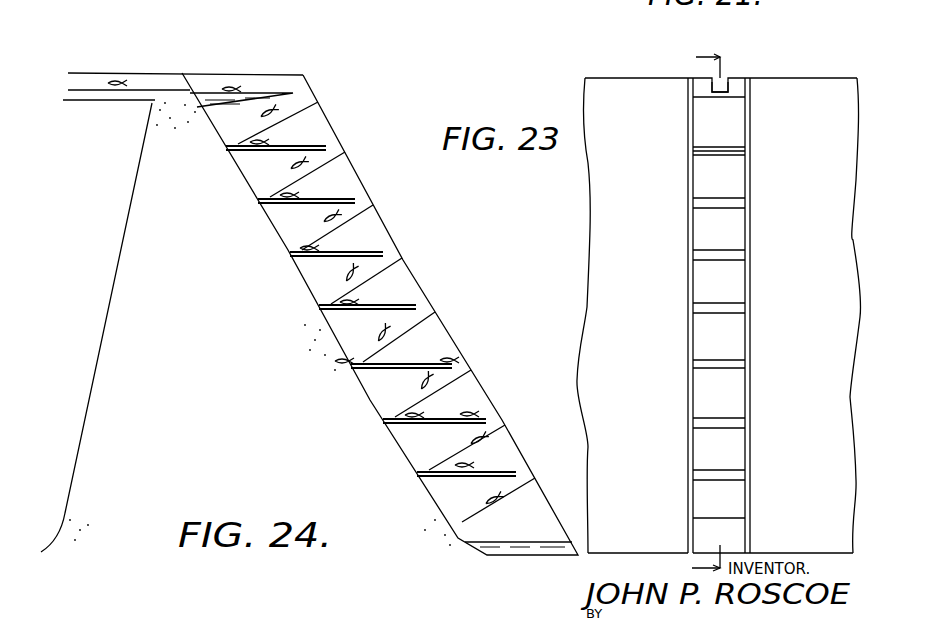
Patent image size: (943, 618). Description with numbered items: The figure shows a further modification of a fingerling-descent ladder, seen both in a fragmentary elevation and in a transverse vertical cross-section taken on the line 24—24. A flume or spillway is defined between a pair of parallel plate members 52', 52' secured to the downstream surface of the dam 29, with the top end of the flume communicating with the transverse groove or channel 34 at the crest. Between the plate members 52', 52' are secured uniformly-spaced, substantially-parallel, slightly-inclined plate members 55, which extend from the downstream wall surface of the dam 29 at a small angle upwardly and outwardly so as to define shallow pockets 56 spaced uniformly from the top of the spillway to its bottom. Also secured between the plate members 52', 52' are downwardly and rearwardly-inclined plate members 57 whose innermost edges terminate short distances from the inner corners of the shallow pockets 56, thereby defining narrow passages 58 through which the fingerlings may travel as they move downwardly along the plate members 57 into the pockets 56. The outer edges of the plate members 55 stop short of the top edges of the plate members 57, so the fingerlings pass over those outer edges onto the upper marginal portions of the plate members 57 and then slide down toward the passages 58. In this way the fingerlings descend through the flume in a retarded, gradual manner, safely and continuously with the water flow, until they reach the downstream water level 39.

In FIG. 23, the section line 24— 24 is at (687, 312).
In FIG. 24, the dam 29 is at (160, 228).
In FIG. 23, the dam 29 is at (610, 192).
In FIG. 24, the transverse groove or channel 34 is at (173, 88).
In FIG. 23, the transverse groove or channel 34 is at (723, 83).
In FIG. 24, the downstream water level 39 is at (498, 541).
In FIG. 23, the downstream water level 39 is at (781, 540).
In FIG. 24, the parallel plate members 52' is at (380, 314).
In FIG. 23, the parallel plate members 52' is at (722, 315).
In FIG. 24, the slightly-inclined plate members 55 is at (222, 106).
In FIG. 23, the slightly-inclined plate members 55 is at (713, 157).
In FIG. 24, the shallow pockets 56 is at (258, 200).
In FIG. 24, the downwardly and rearwardly-inclined plate members 57 is at (290, 117).
In FIG. 23, the downwardly and rearwardly-inclined plate members 57 is at (735, 118).
In FIG. 24, the narrow passages 58 is at (243, 142).